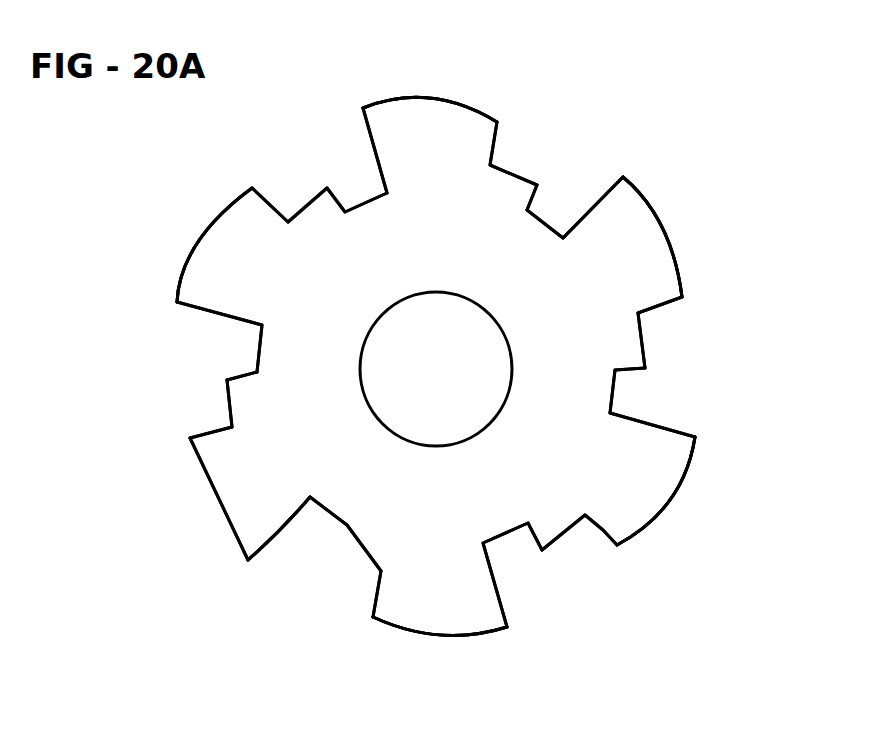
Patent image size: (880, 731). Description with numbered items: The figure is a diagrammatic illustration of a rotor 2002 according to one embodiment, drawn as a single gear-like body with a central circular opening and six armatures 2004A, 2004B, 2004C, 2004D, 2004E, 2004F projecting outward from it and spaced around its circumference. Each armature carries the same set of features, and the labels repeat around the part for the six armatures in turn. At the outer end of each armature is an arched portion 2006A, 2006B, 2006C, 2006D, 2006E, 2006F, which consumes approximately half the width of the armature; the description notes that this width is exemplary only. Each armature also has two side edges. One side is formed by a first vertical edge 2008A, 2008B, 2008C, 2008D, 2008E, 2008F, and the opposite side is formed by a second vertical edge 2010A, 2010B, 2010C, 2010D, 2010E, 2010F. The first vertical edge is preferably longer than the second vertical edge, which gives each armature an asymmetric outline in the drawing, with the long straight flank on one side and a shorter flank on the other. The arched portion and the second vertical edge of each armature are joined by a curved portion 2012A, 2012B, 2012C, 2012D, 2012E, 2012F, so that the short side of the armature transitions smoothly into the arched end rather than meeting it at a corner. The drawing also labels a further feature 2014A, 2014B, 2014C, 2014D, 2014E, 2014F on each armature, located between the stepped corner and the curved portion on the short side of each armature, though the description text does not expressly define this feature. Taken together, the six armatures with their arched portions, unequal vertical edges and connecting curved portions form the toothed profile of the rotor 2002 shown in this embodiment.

The rotor 2002 is at (605, 190).
The armature 2004A is at (632, 243).
The arched portion 2006A is at (668, 228).
The first vertical edge 2008A is at (628, 180).
The second vertical edge 2010A is at (652, 308).
The curved portion 2012A is at (622, 376).
The step side A 2014A is at (645, 348).
The armature 2004B is at (627, 453).
The arched portion 2006B is at (678, 482).
The first vertical edge 2008B is at (613, 415).
The second vertical edge 2010B is at (602, 537).
The curved portion 2012B is at (553, 543).
The step side B 2014B is at (533, 543).
The armature 2004C is at (427, 585).
The arched portion 2006C is at (450, 637).
The first vertical edge 2008C is at (497, 582).
The second vertical edge 2010C is at (375, 597).
The curved portion 2012C is at (338, 540).
The step side C 2014C is at (357, 567).
The armature 2004D is at (242, 488).
The arched portion 2006D is at (192, 465).
The first vertical edge 2008D is at (283, 528).
The second vertical edge 2010D is at (195, 440).
The curved portion 2012D is at (238, 367).
The step side D 2014D is at (227, 400).
The armature 2004E is at (250, 250).
The arched portion 2006E is at (193, 250).
The first vertical edge 2008E is at (215, 313).
The second vertical edge 2010E is at (265, 193).
The curved portion 2012E is at (335, 190).
The step side E 2014E is at (300, 203).
The armature 2004F is at (428, 133).
The arched portion 2006F is at (463, 107).
The first vertical edge 2008F is at (378, 165).
The second vertical edge 2010F is at (507, 168).
The curved portion 2012F is at (545, 225).
The step side F 2014F is at (530, 203).